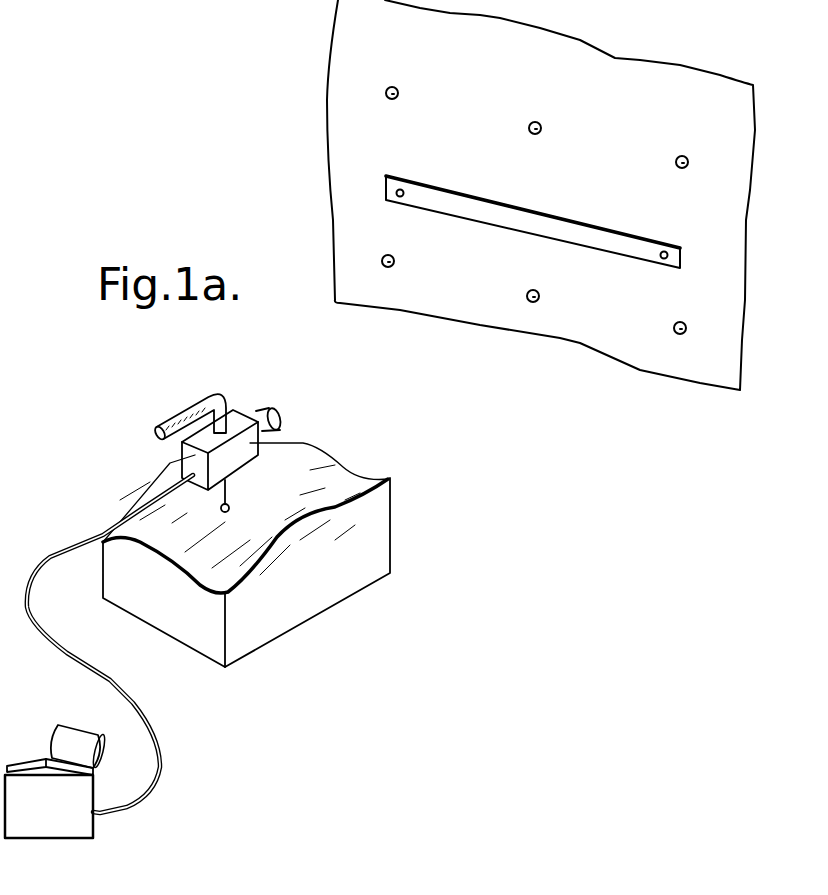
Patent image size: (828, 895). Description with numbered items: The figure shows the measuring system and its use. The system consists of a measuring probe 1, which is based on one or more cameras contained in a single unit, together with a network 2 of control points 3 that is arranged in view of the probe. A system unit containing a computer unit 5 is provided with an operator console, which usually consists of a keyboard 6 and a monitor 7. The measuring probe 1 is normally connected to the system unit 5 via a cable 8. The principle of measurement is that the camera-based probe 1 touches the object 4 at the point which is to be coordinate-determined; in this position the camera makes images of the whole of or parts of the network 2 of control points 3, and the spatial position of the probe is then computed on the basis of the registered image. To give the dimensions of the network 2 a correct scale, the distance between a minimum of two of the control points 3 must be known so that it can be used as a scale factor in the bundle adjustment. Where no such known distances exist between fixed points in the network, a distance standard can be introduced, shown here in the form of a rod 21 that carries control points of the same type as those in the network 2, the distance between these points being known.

The measuring probe 1 is at (260, 392).
The network 2 is at (340, 122).
The control points 3 is at (385, 93).
The rod 21 is at (620, 243).
The object 4 is at (362, 535).
The computer unit 5 is at (75, 825).
The keyboard 6 is at (24, 765).
The monitor 7 is at (75, 742).
The cable 8 is at (162, 740).